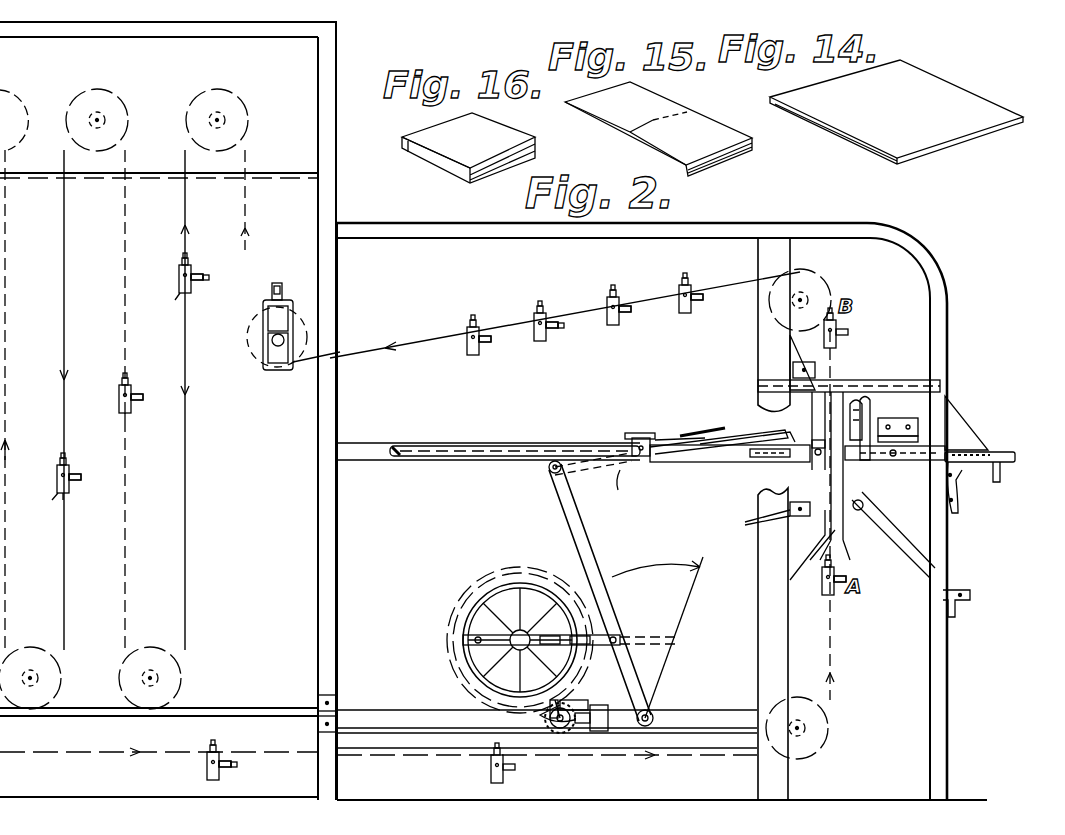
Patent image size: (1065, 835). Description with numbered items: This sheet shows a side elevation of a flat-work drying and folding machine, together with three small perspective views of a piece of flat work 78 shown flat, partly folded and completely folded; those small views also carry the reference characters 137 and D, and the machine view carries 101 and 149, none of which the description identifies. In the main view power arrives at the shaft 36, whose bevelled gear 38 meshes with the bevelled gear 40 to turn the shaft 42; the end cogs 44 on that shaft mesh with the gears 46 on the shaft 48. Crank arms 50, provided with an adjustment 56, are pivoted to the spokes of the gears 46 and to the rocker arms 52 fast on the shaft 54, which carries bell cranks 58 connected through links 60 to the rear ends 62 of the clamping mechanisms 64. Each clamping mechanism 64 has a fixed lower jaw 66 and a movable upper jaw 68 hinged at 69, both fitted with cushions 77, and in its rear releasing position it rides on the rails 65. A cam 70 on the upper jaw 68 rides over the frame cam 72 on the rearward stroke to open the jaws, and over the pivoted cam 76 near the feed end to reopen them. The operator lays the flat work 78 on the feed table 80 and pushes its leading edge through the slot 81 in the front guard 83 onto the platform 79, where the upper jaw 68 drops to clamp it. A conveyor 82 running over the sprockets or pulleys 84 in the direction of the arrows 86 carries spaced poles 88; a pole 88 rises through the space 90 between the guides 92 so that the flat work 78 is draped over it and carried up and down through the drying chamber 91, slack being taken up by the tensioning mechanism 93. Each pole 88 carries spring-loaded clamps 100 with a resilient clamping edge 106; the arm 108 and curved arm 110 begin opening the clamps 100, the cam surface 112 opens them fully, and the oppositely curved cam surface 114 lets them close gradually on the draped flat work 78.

In FIG. 2, the shaft 36 is at (375, 712).
In FIG. 2, the bevelled gear 38 is at (575, 728).
In FIG. 2, the bevelled gear 40 is at (578, 728).
In FIG. 2, the shaft 42 is at (570, 710).
In FIG. 2, the end cogs 44 is at (527, 700).
In FIG. 2, the gears 46 is at (458, 610).
In FIG. 2, the shaft 48 is at (522, 583).
In FIG. 2, the crank arms 50 is at (500, 640).
In FIG. 2, the rocker arms 52 is at (655, 680).
In FIG. 2, the shaft 54 is at (653, 716).
In FIG. 2, the adjustment 56 is at (553, 633).
In FIG. 2, the bell cranks 58 is at (600, 500).
In FIG. 2, the links 60 is at (600, 465).
In FIG. 2, the rear ends 62 is at (632, 445).
In FIG. 2, the clamping mechanisms 64 is at (710, 464).
In FIG. 2, the rails 65 is at (455, 433).
In FIG. 2, the fixed lower jaw 66 is at (668, 462).
In FIG. 2, the movable upper jaw 68 is at (735, 442).
In FIG. 2, the hinge 69 is at (635, 470).
In FIG. 2, the cam 70 is at (700, 436).
In FIG. 2, the cam 72 is at (667, 438).
In FIG. 2, the cam 76 is at (905, 440).
In FIG. 2, the cushions 77 is at (760, 460).
In FIG. 16, the flat work 78 is at (495, 142).
In FIG. 14, the flat work 78 is at (896, 112).
In FIG. 2, the flat work 78 is at (176, 278).
In FIG. 2, the platform 79 is at (962, 514).
In FIG. 2, the feed table 80 is at (990, 478).
In FIG. 2, the slot 81 is at (975, 446).
In FIG. 2, the conveyor 82 is at (125, 512).
In FIG. 2, the front guard 83 is at (950, 420).
In FIG. 2, the sprockets or pulleys 84 is at (194, 99).
In FIG. 2, the arrows 86 is at (62, 380).
In FIG. 2, the poles 88 is at (119, 398).
In FIG. 2, the space 90 is at (750, 522).
In FIG. 2, the drying chamber 91 is at (168, 411).
In FIG. 2, the guides 92 is at (820, 530).
In FIG. 2, the tensioning mechanism 93 is at (252, 336).
In FIG. 2, the clamps 100 is at (192, 268).
In FIG. 2, the nozzle 101 is at (205, 280).
In FIG. 2, the clamping edge 106 is at (133, 404).
In FIG. 2, the arm 108 is at (885, 533).
In FIG. 2, the curved arm 110 is at (860, 494).
In FIG. 2, the cam surface 112 is at (865, 415).
In FIG. 2, the oppositely curved cam surface 114 is at (852, 400).
In FIG. 16, the fold line 137 is at (445, 154).
In FIG. 15, the fold line 137 is at (663, 155).
In FIG. 2, the bottle base 149 is at (180, 295).
In FIG. 15, the folded sheet D is at (650, 120).